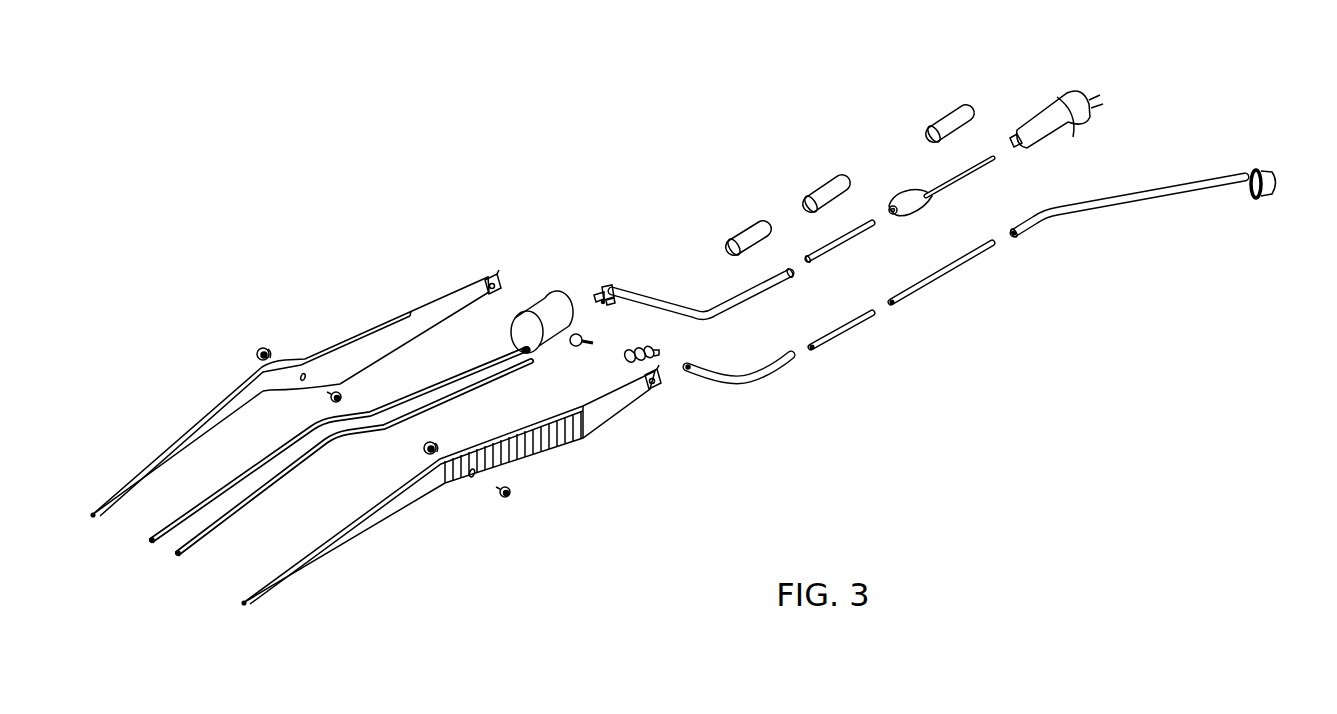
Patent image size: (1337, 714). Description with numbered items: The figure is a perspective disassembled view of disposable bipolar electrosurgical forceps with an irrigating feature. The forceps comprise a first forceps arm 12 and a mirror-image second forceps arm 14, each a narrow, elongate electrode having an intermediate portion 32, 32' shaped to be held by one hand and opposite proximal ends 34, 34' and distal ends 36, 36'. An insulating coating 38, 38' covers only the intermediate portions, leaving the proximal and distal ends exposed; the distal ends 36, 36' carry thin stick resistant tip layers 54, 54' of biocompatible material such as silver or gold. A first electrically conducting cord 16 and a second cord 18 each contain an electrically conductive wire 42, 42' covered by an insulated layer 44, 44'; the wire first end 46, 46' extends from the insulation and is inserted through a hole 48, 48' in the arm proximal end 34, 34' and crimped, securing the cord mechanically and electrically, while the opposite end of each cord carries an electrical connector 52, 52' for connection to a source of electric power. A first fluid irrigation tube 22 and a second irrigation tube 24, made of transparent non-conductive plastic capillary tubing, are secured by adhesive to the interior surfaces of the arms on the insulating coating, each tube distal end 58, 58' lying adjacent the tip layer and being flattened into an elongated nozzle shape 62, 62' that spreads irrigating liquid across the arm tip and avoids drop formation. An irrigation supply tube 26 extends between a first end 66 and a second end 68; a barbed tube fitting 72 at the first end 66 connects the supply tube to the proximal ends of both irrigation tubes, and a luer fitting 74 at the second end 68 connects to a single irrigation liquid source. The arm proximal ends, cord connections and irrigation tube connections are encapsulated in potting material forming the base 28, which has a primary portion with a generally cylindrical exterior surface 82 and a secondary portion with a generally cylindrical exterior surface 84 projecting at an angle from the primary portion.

The first forceps arm 12 is at (357, 326).
The second forceps arm 14 is at (456, 492).
The first electrically conducting cord 16 is at (814, 252).
The second electrically conducting cord 18 is at (842, 249).
The first fluid irrigation tube 22 is at (236, 472).
The second fluid irrigation tube 24 is at (249, 506).
The irrigation supply tube 26 is at (1097, 218).
The base 28 is at (530, 298).
The intermediate portion 32 is at (290, 359).
The intermediate portion 32' is at (487, 484).
The proximal end 34 is at (476, 264).
The proximal end 34' is at (675, 396).
The distal end 36 is at (73, 542).
The distal end 36' is at (230, 630).
The insulating coating 38 is at (177, 434).
The insulating coating 38' is at (344, 543).
The electrically conductive wire 42 is at (600, 266).
The electrically conductive wire 42' is at (635, 318).
The insulated layer 44 is at (701, 270).
The insulated layer 44' is at (726, 269).
The wire first end 46 is at (582, 281).
The wire first end 46' is at (604, 340).
The hole 48 is at (494, 320).
The hole 48' is at (659, 415).
The electrical connector 52 is at (1069, 90).
The electrical connector 52' is at (1132, 111).
The stick resistant tip layer 54 is at (225, 416).
The stick resistant tip layer 54' is at (385, 522).
The tube distal end 58 is at (133, 565).
The tube distal end 58' is at (161, 580).
The nozzle shape 62 is at (136, 521).
The nozzle shape 62' is at (218, 551).
The supply tube first end 66 is at (690, 366).
The supply tube second end 68 is at (1273, 185).
The barbed tube fitting 72 is at (658, 353).
The luer fitting 74 is at (1258, 172).
The primary portion exterior surface 82 is at (549, 302).
The secondary portion exterior surface 84 is at (573, 345).